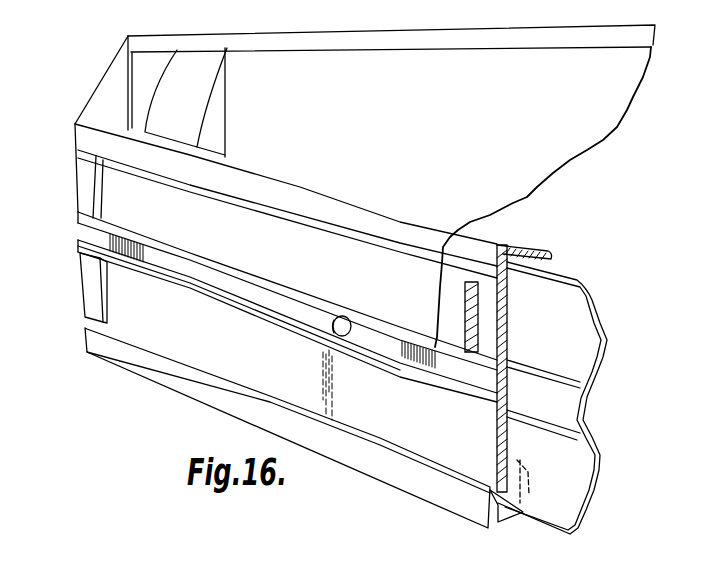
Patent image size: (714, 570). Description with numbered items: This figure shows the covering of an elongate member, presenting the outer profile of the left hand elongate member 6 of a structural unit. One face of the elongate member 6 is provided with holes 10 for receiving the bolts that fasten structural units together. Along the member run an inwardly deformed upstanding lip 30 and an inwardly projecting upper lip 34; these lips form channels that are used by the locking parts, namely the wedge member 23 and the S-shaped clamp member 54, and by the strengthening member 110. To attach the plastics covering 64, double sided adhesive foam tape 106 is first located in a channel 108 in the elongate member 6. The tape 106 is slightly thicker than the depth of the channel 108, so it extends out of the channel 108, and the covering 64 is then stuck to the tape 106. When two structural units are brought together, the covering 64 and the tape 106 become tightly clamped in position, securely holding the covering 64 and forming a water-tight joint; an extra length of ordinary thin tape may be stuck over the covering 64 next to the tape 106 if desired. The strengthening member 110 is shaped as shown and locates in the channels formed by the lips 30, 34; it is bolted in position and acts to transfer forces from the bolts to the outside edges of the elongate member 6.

The elongate member 6 is at (195, 345).
The hole 10 is at (327, 337).
The wedge member 23 is at (207, 107).
The inwardly deformed upstanding lip 30 is at (533, 483).
The inwardly projecting upper lip 34 is at (537, 248).
The clamp member 54 is at (90, 292).
The plastics covering 64 is at (545, 162).
The double sided adhesive foam tape 106 is at (458, 338).
The channel 108 is at (484, 335).
The strengthening member 110 is at (577, 507).